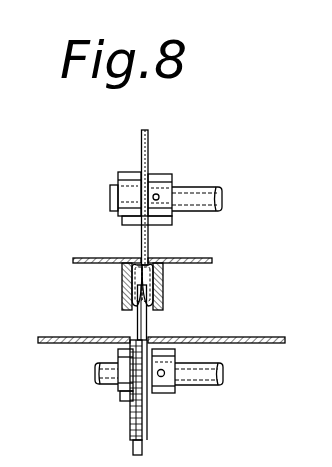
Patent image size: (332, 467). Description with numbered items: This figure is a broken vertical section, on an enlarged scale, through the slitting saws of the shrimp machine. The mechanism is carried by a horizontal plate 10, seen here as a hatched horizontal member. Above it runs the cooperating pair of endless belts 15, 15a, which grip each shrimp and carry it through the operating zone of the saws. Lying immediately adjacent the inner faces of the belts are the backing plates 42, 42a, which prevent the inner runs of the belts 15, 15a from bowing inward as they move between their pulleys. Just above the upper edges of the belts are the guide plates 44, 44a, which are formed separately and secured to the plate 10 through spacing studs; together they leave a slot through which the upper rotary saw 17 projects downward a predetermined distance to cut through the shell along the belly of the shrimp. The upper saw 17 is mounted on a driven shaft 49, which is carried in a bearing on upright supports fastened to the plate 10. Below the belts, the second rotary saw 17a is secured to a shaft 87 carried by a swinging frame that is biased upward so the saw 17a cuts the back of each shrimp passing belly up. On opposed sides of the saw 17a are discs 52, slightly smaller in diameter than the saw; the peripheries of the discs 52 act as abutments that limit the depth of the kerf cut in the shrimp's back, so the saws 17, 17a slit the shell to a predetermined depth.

The horizontal plate 10 is at (263, 337).
The endless belt 15 is at (160, 288).
The endless belt 15a is at (125, 288).
The rotary slitting saw 17 is at (150, 148).
The rotary slitting saw 17a is at (142, 450).
The backing plate 42 is at (163, 274).
The backing plate 42a is at (122, 272).
The guide plate 44 is at (208, 258).
The guide plate 44a is at (107, 258).
The driven shaft 49 is at (200, 188).
The disc 52 is at (136, 325).
The shaft 87 is at (200, 378).